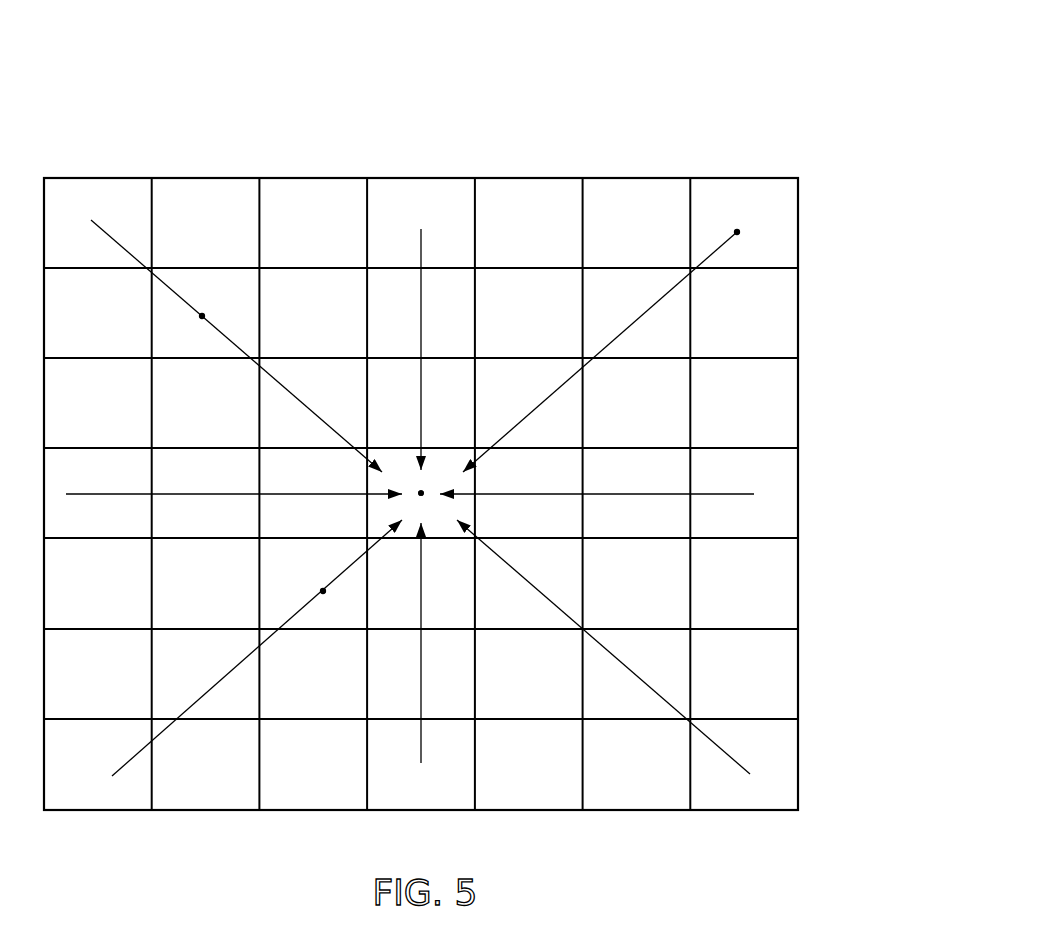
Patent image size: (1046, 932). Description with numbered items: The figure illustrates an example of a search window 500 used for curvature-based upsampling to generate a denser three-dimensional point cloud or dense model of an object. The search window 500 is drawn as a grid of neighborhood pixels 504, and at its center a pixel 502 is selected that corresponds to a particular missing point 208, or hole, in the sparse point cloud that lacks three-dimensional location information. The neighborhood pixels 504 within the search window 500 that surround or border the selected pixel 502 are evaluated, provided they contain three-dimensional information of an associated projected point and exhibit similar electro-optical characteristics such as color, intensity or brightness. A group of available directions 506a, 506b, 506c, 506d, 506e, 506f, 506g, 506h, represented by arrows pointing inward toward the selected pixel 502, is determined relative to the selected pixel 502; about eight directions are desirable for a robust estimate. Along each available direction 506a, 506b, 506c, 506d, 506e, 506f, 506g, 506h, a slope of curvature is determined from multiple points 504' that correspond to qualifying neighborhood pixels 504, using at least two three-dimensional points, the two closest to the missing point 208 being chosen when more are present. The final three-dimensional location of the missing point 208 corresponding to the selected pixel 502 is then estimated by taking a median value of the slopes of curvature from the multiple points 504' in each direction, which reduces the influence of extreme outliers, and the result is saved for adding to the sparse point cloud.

The search window 500 is at (693, 113).
The neighborhood pixels 504 is at (421, 465).
The multiple points 504' is at (527, 395).
The pixel 502 is at (423, 468).
The missing point 208 is at (421, 497).
The available direction 506a is at (660, 303).
The available direction 506b is at (713, 496).
The available direction 506c is at (663, 702).
The available direction 506d is at (418, 738).
The available direction 506e is at (200, 694).
The available direction 506f is at (122, 494).
The available direction 506g is at (137, 265).
The available direction 506h is at (418, 257).